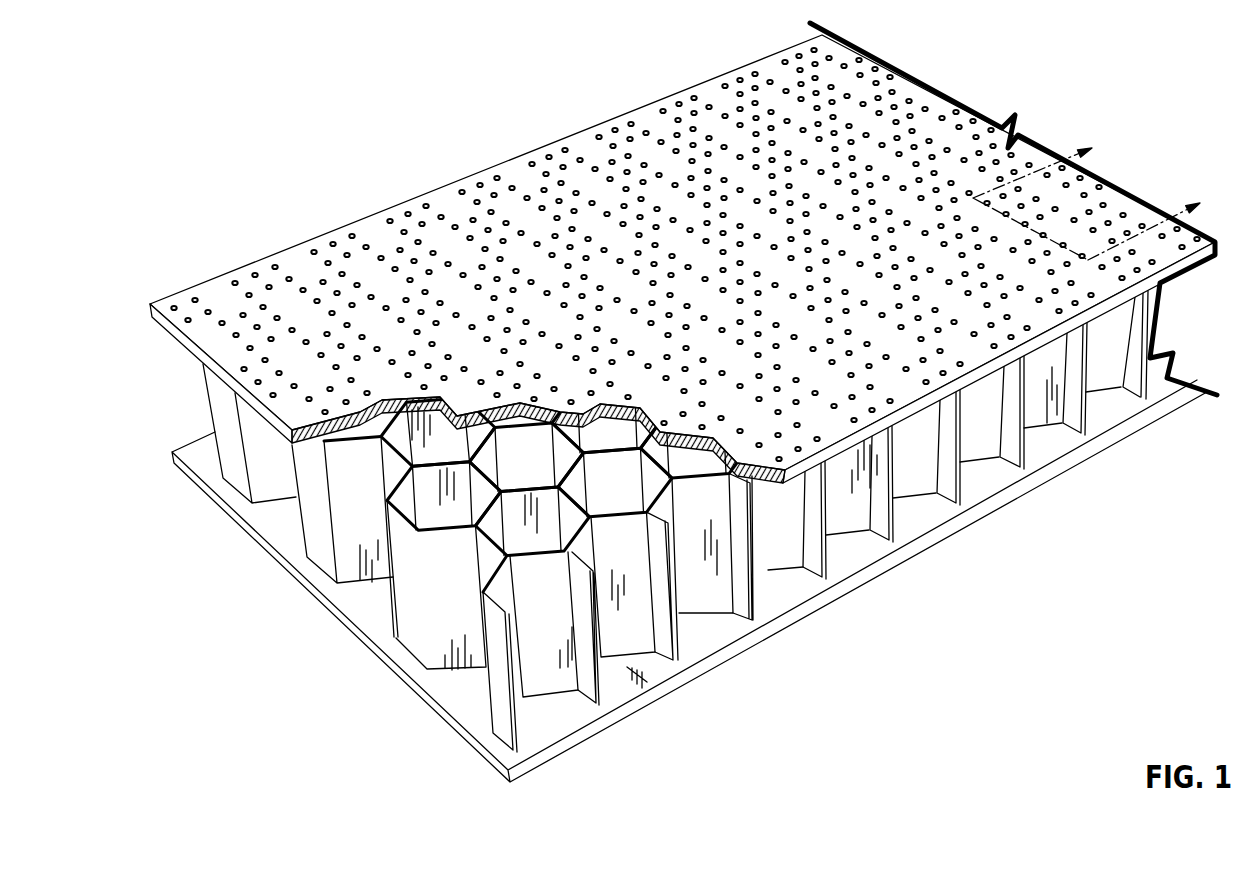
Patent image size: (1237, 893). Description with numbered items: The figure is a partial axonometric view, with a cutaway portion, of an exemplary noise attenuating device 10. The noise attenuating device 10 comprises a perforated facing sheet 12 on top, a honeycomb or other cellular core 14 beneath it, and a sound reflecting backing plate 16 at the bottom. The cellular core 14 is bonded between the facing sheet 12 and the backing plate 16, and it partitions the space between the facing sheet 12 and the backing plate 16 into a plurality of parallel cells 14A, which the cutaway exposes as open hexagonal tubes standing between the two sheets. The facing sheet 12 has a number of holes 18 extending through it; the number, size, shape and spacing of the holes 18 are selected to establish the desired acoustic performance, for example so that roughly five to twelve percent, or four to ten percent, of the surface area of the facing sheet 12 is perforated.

The noise attenuating device 10 is at (686, 402).
The perforated facing sheet 12 is at (303, 240).
The cellular core 14 is at (671, 521).
The parallel cells 14A is at (543, 523).
The sound reflecting backing plate 16 is at (398, 678).
The holes 18 is at (597, 133).